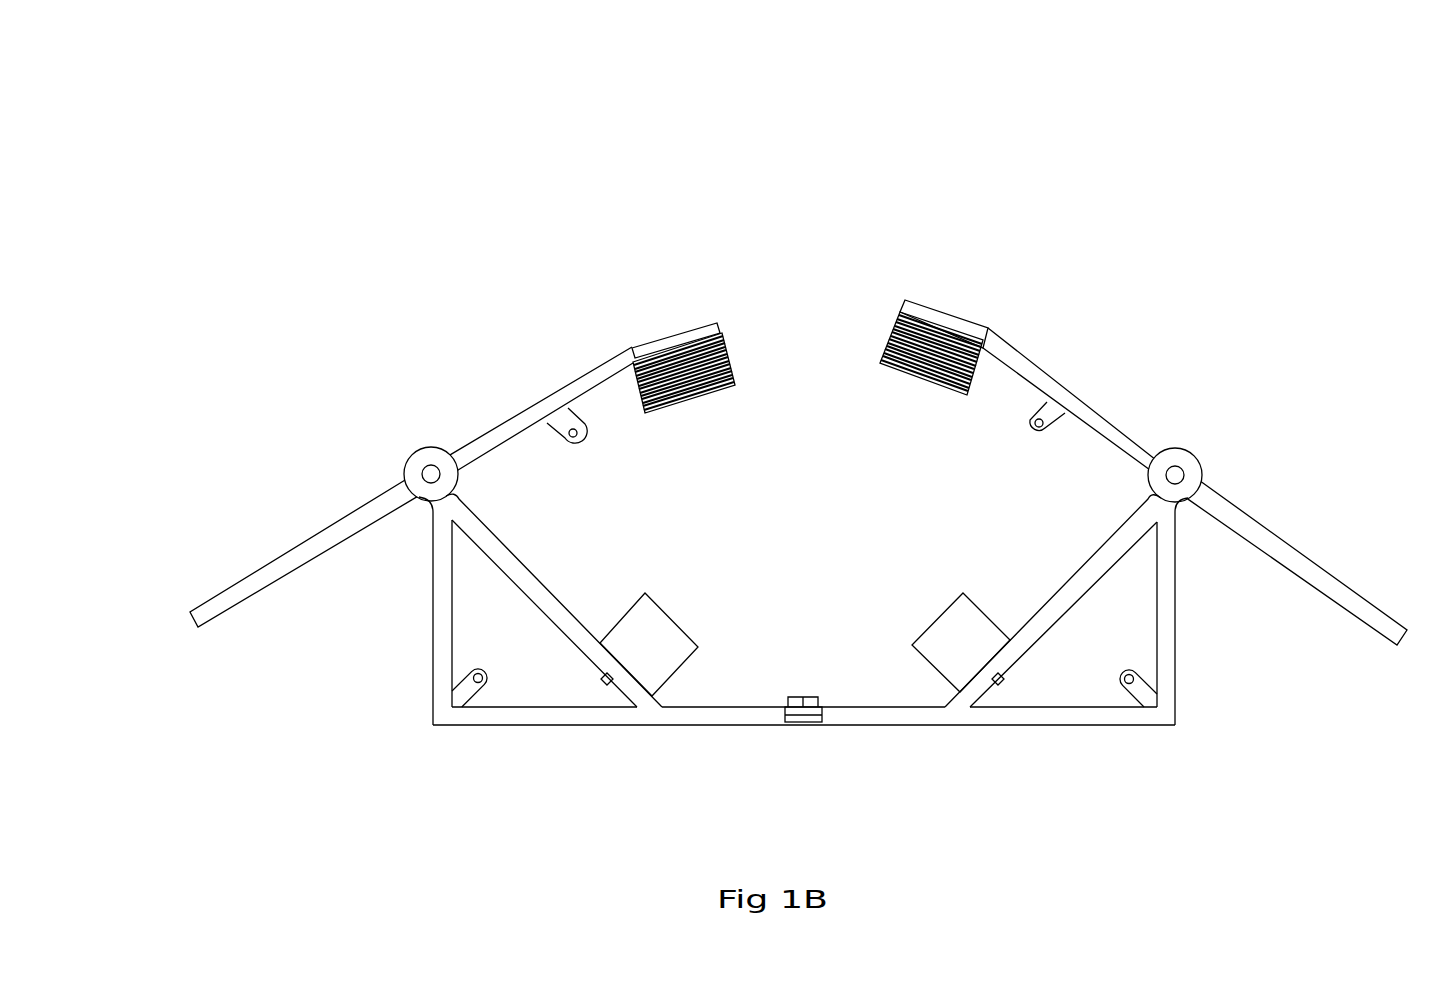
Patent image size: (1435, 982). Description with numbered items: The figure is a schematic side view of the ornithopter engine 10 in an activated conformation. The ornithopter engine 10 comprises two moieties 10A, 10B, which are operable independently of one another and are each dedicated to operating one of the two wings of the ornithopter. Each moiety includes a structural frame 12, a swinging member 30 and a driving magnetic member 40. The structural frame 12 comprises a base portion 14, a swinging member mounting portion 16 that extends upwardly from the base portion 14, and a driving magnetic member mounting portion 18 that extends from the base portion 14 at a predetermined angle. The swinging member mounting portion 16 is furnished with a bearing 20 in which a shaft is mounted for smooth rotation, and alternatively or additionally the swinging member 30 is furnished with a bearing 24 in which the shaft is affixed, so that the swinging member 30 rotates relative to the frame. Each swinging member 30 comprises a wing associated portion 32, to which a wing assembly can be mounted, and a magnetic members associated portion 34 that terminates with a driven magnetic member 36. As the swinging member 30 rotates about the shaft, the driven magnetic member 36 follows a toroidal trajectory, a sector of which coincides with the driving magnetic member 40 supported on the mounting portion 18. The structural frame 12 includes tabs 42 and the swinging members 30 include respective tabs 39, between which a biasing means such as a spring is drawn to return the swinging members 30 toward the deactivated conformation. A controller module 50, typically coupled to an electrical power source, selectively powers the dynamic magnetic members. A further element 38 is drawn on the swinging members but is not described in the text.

The ornithopter engine 10 is at (247, 120).
The moiety 10A is at (337, 237).
The moiety 10B is at (1265, 212).
The structural frame 12 is at (1058, 753).
The base portion 14 is at (878, 718).
The swinging member mounting portion 16 is at (425, 675).
The driving magnetic member mounting portion 18 is at (550, 590).
The bearing 20 is at (440, 476).
The bearing 24 is at (1190, 445).
The swinging member 30 is at (448, 403).
The wing associated portion 32 is at (215, 595).
The magnetic members associated portion 34 is at (582, 362).
The driven magnetic member 36 is at (667, 330).
The pad 38 is at (745, 370).
The tab 39 is at (588, 443).
The driving magnetic member 40 is at (672, 617).
The tab 42 is at (462, 697).
The controller module 50 is at (803, 722).